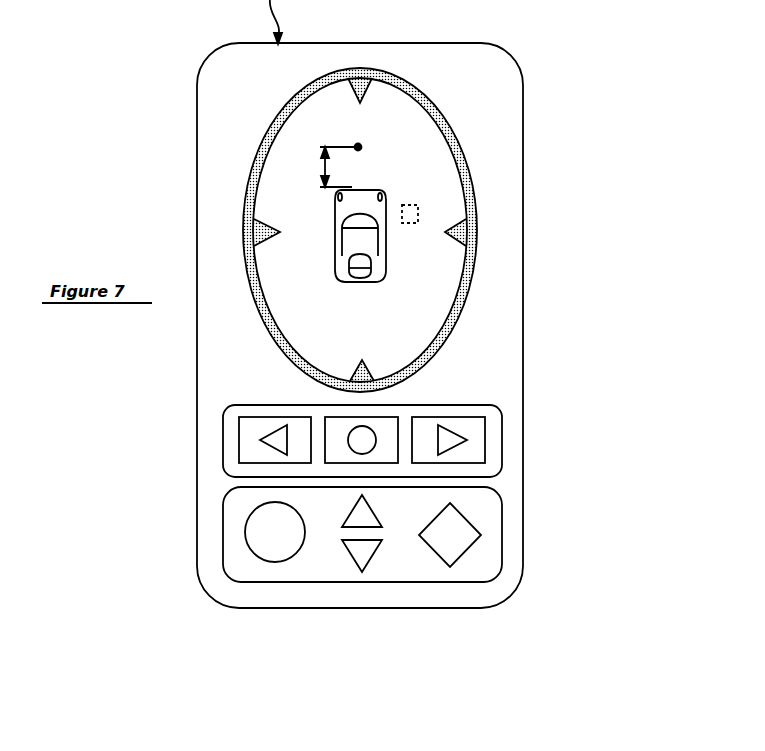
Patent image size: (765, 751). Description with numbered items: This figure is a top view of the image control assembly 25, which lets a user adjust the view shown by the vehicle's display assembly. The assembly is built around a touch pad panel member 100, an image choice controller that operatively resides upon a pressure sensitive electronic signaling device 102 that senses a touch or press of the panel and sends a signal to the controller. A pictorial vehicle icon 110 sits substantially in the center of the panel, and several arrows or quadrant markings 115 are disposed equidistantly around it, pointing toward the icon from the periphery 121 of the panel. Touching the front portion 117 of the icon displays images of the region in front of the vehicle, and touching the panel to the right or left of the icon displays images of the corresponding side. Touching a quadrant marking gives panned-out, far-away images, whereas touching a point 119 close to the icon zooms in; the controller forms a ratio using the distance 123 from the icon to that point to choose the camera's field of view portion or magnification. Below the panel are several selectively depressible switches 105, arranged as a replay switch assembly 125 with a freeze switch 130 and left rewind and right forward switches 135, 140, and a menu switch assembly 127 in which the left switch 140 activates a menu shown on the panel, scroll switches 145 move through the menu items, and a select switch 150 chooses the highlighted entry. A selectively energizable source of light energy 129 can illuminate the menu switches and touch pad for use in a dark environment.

The image control assembly 25 is at (548, 121).
The touch pad panel member 100 is at (447, 131).
The pressure sensitive electronic signaling device 102 is at (450, 187).
The selectively depressible switches 105 is at (391, 497).
The vehicle icon 110 is at (380, 280).
The quadrant markings 115 is at (367, 93).
The front portion of vehicle icon 117 is at (372, 190).
The touched point 119 is at (360, 146).
The periphery of touch pad panel 121 is at (277, 120).
The distance from icon to point 123 is at (322, 170).
The replay switch assembly 125 is at (530, 438).
The menu switch assembly 127 is at (530, 532).
The source of light energy 129 is at (418, 213).
The freeze switch 130 is at (390, 427).
The rewind switch 135 is at (262, 427).
The forward switch 140 is at (478, 430).
The scroll switches 145 is at (365, 550).
The select switch 150 is at (458, 542).